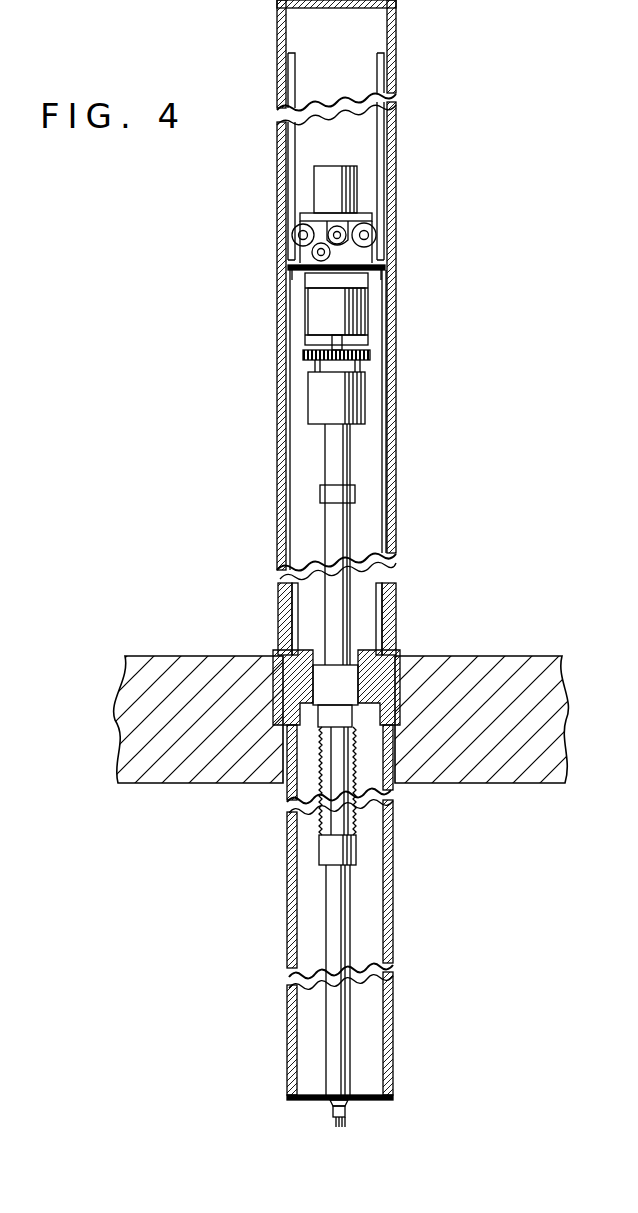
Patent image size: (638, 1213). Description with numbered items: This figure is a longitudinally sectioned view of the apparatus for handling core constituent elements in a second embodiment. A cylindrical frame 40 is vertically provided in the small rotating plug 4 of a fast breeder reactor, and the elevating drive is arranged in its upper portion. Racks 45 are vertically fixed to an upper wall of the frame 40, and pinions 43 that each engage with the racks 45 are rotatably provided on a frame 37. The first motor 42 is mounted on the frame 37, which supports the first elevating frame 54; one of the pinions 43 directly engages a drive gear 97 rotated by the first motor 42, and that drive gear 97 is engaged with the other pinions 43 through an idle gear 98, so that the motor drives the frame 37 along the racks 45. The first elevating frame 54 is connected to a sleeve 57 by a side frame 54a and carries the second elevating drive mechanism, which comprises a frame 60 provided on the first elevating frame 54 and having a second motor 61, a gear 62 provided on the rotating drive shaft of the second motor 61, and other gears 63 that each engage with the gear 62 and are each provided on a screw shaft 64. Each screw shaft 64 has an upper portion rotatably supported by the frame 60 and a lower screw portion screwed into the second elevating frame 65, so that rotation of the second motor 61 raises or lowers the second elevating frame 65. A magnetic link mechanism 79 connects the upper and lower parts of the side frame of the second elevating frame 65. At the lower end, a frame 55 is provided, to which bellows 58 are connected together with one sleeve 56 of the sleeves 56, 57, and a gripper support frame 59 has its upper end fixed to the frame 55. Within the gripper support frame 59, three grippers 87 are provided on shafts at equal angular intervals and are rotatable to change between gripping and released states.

The small rotating plug 4 is at (507, 668).
The frame 37 is at (302, 212).
The cylindrical frame 40 is at (392, 923).
The first motor 42 is at (337, 175).
The pinions 43 is at (377, 236).
The racks 45 is at (300, 66).
The first elevating frame 54 is at (358, 269).
The side frame 54a is at (386, 476).
The frame 55 is at (354, 847).
The sleeve 56 is at (340, 668).
The sleeve 57 is at (311, 592).
The bellows 58 is at (320, 790).
The gripper support frame 59 is at (349, 895).
The frame 60 is at (312, 320).
The second motor 61 is at (310, 323).
The gear 62 is at (348, 344).
The gears 63 is at (303, 355).
The screw shaft 64 is at (313, 365).
The second elevating frame 65 is at (351, 455).
The magnetic link mechanism 79 is at (320, 493).
The grippers 87 is at (335, 1122).
The drive gear 97 is at (362, 213).
The idle gear 98 is at (311, 252).